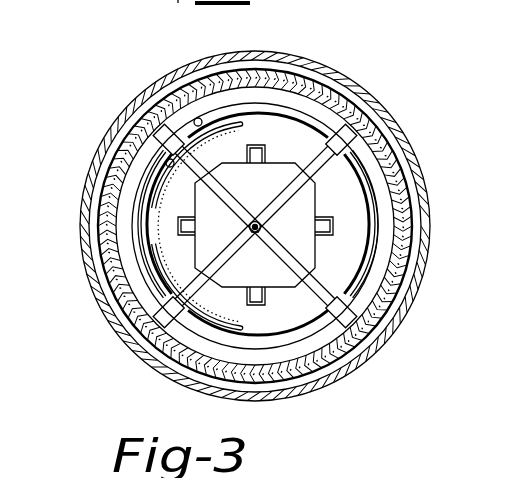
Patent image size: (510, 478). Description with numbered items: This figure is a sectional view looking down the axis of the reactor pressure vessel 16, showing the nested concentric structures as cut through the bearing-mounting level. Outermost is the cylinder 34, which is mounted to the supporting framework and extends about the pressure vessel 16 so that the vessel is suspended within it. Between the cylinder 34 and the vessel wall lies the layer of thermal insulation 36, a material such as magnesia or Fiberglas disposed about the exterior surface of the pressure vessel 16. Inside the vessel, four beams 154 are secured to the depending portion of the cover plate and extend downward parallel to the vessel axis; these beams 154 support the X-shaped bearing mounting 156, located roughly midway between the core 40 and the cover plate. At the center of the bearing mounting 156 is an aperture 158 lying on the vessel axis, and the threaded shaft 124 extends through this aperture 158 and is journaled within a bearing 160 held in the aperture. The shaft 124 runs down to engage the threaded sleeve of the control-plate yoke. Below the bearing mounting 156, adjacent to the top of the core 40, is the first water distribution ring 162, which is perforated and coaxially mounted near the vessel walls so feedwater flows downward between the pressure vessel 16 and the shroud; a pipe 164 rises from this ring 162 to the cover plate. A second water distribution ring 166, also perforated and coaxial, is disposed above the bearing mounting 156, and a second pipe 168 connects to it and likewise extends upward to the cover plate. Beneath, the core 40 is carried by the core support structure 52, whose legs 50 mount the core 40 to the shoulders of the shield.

The pressure vessel 16 is at (393, 245).
The cylinder 34 is at (383, 148).
The layer of thermal insulation 36 is at (398, 194).
The core 40 is at (268, 199).
The legs 50 is at (322, 222).
The core support structure 52 is at (273, 167).
The threaded shaft 124 is at (250, 227).
The beams 154 is at (345, 143).
The X-shaped bearing mounting 156 is at (325, 292).
The aperture 158 is at (262, 226).
The bearing 160 is at (257, 235).
The first water distribution ring 162 is at (278, 342).
The pipe 164 is at (200, 120).
The second water distribution ring 166 is at (154, 209).
The second pipe 168 is at (56, 154).